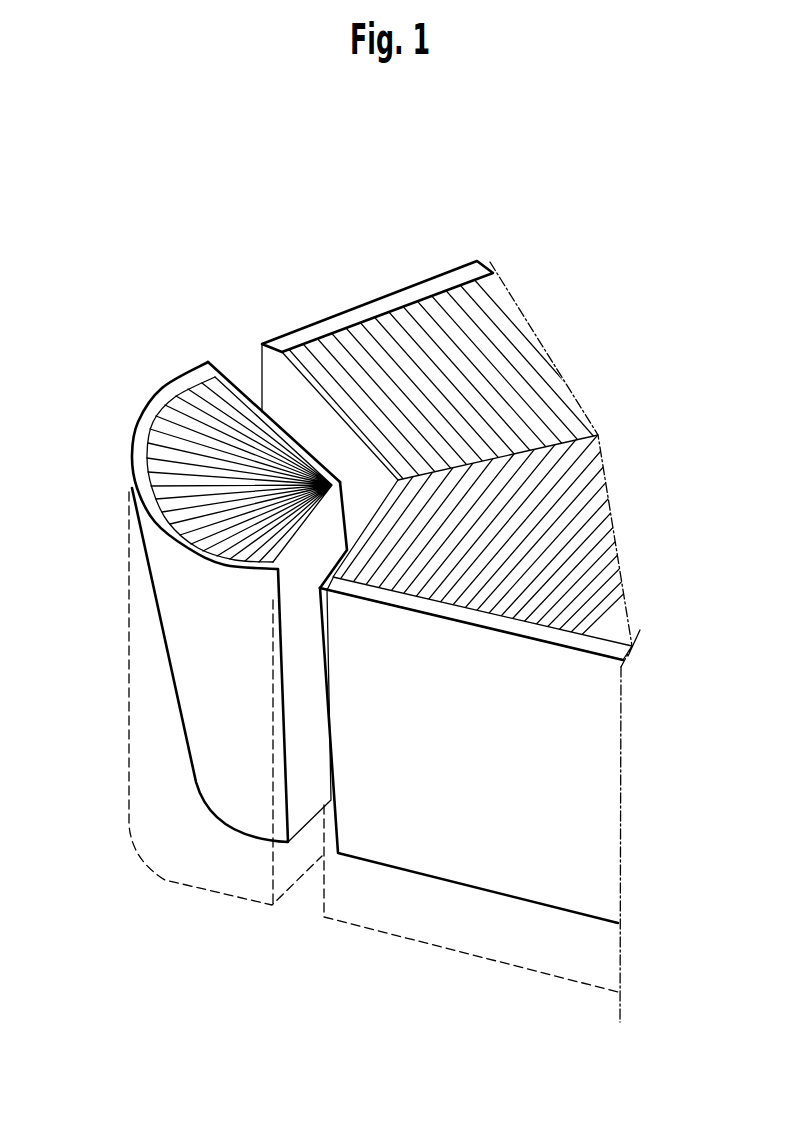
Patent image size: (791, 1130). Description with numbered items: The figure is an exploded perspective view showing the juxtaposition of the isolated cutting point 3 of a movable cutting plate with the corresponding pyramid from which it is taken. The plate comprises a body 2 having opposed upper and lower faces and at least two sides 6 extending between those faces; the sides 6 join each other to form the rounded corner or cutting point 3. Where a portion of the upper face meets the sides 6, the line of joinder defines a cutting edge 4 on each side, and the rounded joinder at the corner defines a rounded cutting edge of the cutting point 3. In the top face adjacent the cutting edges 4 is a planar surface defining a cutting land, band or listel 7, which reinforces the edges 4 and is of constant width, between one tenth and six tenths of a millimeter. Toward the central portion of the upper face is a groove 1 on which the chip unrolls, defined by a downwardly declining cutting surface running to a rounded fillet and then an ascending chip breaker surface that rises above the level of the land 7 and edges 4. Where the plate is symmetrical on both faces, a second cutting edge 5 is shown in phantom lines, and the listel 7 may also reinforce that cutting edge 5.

The groove 1 is at (213, 416).
The body 2 is at (301, 412).
The cutting point 3 is at (300, 645).
The cutting edge 4 is at (132, 462).
The cutting edge 5 is at (136, 848).
The side 6 is at (410, 828).
The cutting land 7 is at (168, 532).